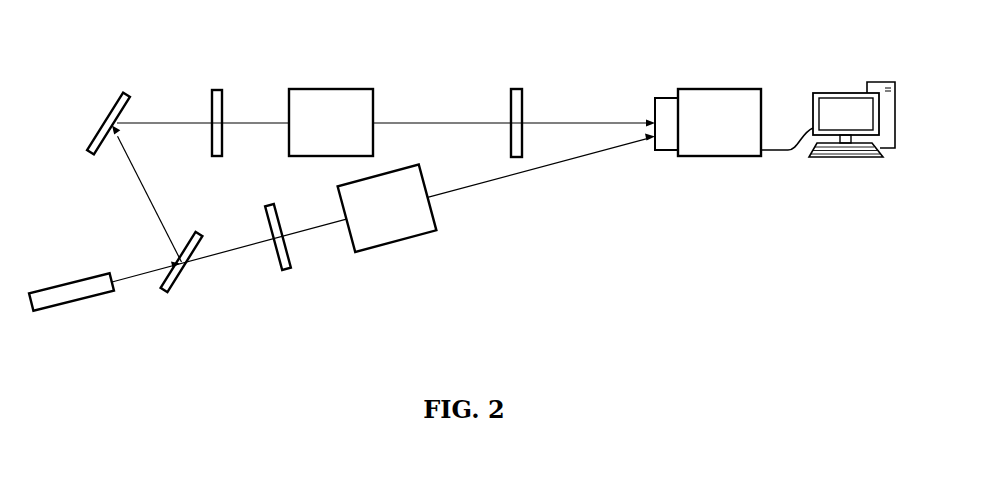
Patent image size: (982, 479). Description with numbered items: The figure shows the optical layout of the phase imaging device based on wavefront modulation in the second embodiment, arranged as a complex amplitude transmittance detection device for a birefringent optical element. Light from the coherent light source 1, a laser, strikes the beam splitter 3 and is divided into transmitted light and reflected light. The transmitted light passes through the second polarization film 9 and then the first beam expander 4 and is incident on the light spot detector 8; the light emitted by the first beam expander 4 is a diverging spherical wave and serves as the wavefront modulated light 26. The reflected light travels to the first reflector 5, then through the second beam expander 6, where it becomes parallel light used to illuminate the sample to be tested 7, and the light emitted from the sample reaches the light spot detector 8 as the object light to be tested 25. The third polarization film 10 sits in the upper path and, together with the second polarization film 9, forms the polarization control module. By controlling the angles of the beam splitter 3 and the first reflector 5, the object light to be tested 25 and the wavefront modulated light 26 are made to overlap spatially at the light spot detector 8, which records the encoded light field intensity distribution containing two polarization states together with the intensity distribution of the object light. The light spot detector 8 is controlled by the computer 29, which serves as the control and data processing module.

The coherent light source 1 is at (62, 308).
The beam splitter 3 is at (170, 293).
The first beam expander 4 is at (395, 242).
The first reflector 5 is at (125, 90).
The second beam expander 6 is at (330, 95).
The sample to be tested 7 is at (513, 90).
The light spot detector 8 is at (678, 92).
The second polarization film 9 is at (285, 272).
The third polarization film 10 is at (213, 90).
The object light to be tested 25 is at (543, 122).
The wavefront modulated light 26 is at (553, 167).
The computer 29 is at (840, 92).